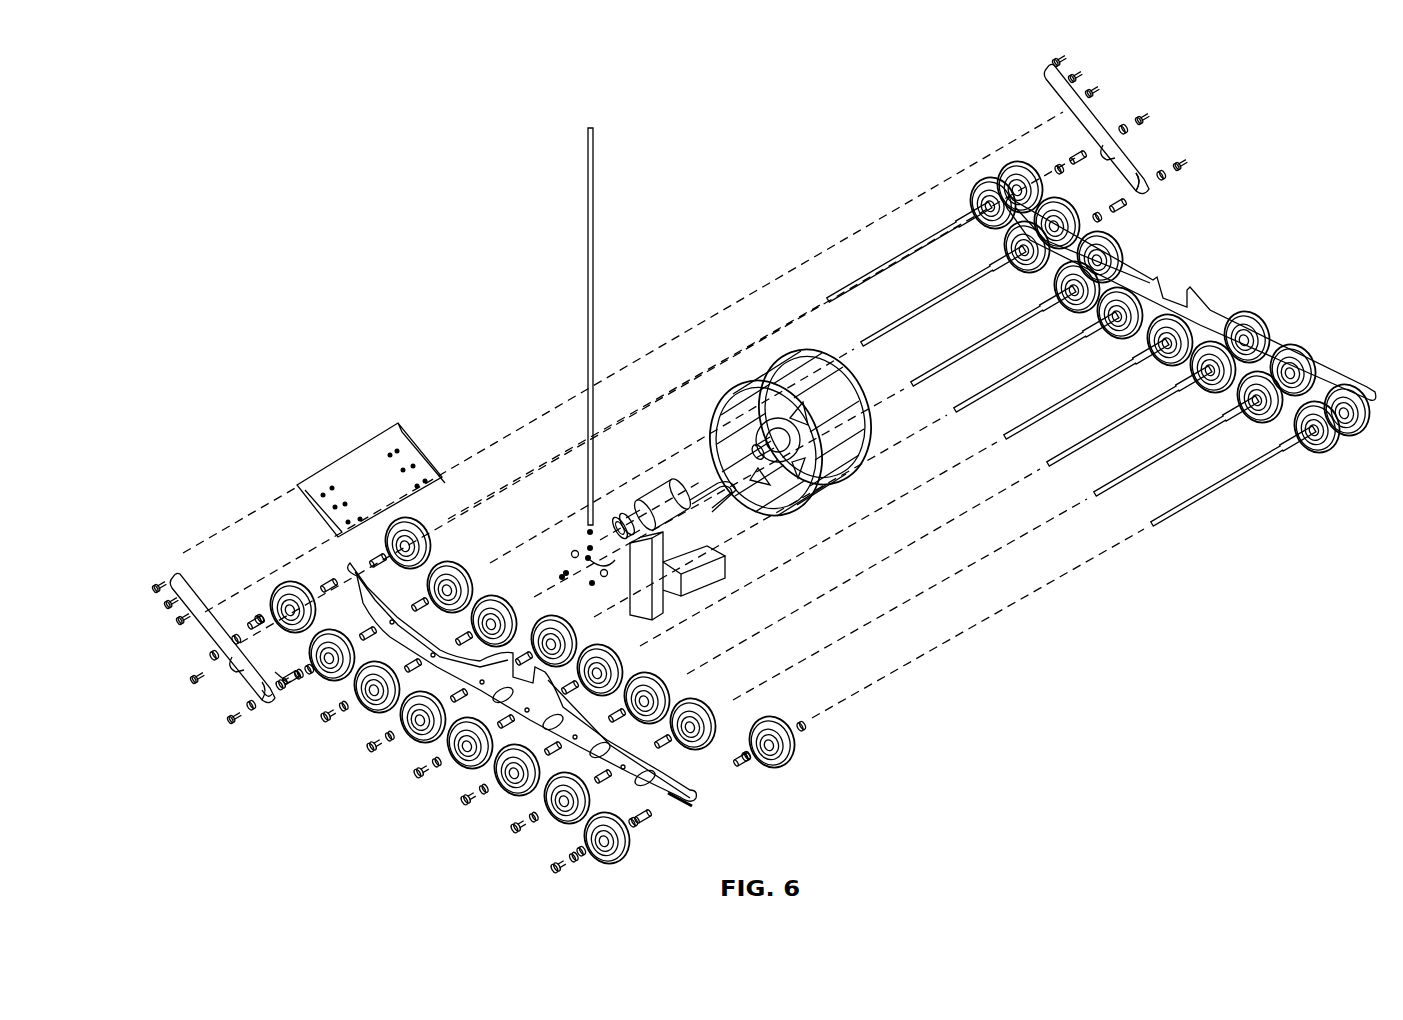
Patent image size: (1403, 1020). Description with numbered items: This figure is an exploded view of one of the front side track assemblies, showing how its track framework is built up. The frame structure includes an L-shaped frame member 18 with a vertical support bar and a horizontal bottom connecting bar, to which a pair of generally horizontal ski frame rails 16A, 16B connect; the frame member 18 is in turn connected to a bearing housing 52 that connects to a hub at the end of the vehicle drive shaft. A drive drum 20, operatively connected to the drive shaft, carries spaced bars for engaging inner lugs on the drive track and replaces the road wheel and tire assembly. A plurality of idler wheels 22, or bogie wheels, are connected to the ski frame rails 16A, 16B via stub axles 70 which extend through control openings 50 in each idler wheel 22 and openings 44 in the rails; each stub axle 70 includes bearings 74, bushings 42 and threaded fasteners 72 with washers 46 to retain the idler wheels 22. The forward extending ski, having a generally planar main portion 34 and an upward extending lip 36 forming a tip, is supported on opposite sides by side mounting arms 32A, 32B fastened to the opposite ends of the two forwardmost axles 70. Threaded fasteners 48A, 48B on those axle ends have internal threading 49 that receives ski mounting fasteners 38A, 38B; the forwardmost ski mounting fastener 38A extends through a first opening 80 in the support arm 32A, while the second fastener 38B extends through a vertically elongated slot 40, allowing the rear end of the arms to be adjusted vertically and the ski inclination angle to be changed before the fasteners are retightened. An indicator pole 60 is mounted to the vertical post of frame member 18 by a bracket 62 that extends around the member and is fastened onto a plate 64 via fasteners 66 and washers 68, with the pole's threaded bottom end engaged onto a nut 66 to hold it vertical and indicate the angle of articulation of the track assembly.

The ski frame rail 16A is at (395, 690).
The ski frame rail 16B is at (1195, 300).
The L-shaped frame member 18 is at (708, 553).
The drive drum 20 is at (790, 330).
The idler wheels 22 is at (493, 590).
The side mounting arm 32A is at (253, 684).
The side mounting arm 32B is at (1097, 120).
The main portion 34 is at (347, 485).
The lip 36 is at (380, 437).
The ski mounting fastener 38A is at (197, 664).
The ski mounting fastener 38B is at (247, 704).
The elongated slot 40 is at (265, 704).
The bushings 42 is at (325, 585).
The openings 44 is at (347, 487).
The washers 46 is at (257, 618).
The threaded fastener 48A is at (265, 597).
The threaded fastener 48B is at (296, 688).
The internal threading 49 is at (284, 682).
The control openings 50 is at (328, 650).
The bearing housing 52 is at (636, 494).
The indicator pole 60 is at (594, 226).
The bracket 62 is at (708, 490).
The plate 64 is at (606, 534).
The fasteners 66 is at (588, 548).
The washers 68 is at (573, 552).
The stub axles 70 is at (890, 275).
The threaded fasteners 72 is at (537, 880).
The bearings 74 is at (588, 856).
The first opening 80 is at (231, 658).